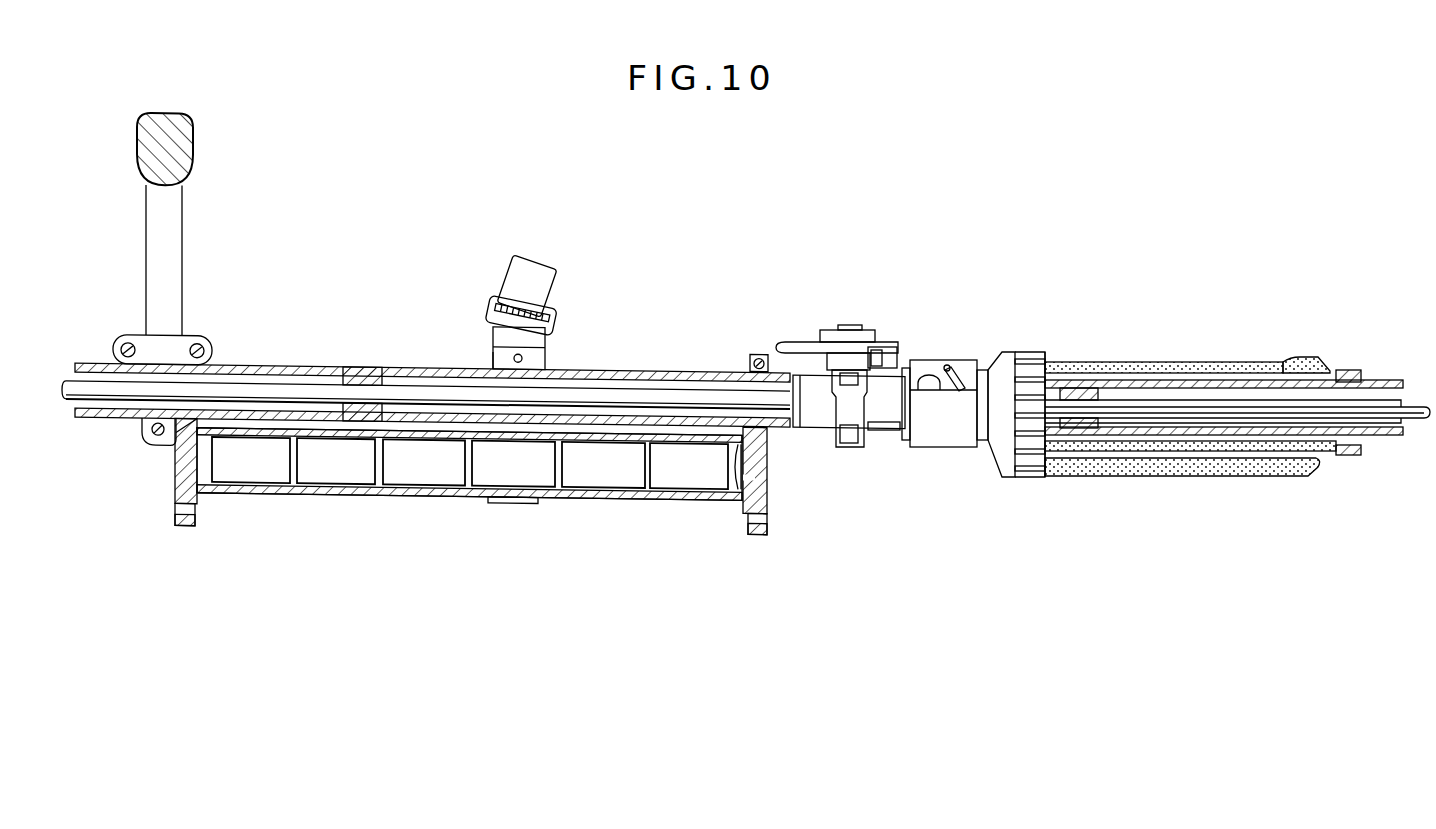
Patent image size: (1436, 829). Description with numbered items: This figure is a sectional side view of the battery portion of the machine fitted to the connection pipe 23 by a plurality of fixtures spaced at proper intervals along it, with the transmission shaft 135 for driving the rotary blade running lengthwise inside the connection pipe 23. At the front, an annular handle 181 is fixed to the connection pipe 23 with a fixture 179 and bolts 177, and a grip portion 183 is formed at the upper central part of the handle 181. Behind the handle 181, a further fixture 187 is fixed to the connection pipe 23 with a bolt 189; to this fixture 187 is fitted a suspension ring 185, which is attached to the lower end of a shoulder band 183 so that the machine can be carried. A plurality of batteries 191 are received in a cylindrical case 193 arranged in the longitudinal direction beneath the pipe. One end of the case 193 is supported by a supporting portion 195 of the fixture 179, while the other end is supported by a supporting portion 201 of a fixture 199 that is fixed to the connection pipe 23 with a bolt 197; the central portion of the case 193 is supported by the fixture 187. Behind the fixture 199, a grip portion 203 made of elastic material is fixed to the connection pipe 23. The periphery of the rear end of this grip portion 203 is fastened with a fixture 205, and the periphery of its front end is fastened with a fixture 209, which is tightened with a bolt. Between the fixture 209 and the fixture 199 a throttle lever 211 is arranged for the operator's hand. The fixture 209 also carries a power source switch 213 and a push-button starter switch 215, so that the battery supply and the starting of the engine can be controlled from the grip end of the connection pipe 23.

The connection pipe 23 is at (393, 372).
The transmission shaft 135 is at (313, 393).
The bolts 177 is at (122, 338).
The fixture 179 is at (178, 470).
The annular handle 181 is at (176, 239).
The grip portion 183 is at (186, 156).
The suspension ring 185 is at (488, 322).
The fixture 187 is at (538, 367).
The bolt 189 is at (493, 363).
The batteries 191 is at (337, 472).
The cylindrical case 193 is at (423, 493).
The supporting portion 195 is at (207, 488).
The bolt 197 is at (758, 354).
The fixture 199 is at (768, 455).
The supporting portion 201 is at (768, 507).
The grip portion 203 is at (1078, 362).
The fixture 205 is at (1352, 370).
The fixture 209 is at (953, 432).
The throttle lever 211 is at (855, 332).
The power source switch 213 is at (958, 378).
The push-button starter switch 215 is at (921, 376).